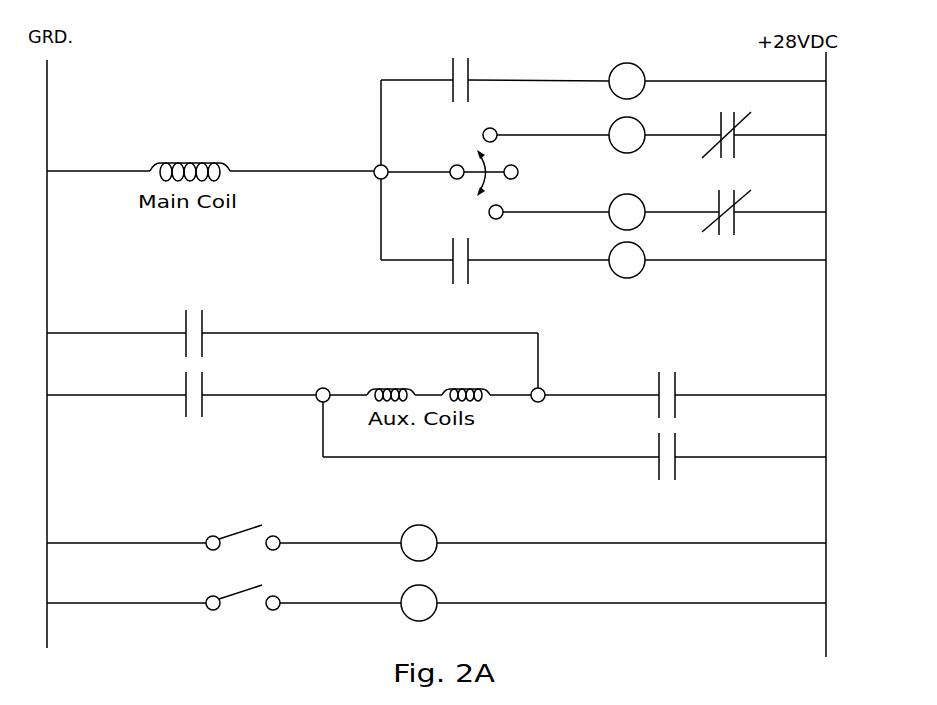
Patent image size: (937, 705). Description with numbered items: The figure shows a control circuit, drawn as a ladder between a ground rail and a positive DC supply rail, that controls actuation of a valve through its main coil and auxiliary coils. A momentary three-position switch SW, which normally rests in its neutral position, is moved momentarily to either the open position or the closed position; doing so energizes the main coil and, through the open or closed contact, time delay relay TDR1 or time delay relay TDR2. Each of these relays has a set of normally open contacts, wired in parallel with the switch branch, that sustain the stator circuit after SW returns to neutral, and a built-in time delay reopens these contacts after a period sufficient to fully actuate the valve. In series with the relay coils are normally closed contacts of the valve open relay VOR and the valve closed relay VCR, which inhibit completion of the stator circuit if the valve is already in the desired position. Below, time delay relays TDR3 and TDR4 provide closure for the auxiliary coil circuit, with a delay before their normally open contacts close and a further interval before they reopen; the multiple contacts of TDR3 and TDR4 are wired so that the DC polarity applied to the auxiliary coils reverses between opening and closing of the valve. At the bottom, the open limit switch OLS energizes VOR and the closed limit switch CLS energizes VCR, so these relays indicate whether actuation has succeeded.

The momentary 3 position switch SW is at (497, 175).
The time delay relay 1 TDR1 is at (551, 107).
The time delay relay 2 TDR2 is at (550, 235).
The time delay relay 3 TDR3 is at (436, 237).
The time delay relay 4 TDR4 is at (436, 361).
The valve open relay VOR is at (553, 340).
The valve closed relay VCR is at (553, 409).
The open limit switch OLS is at (163, 527).
The closed limit switch CLS is at (163, 589).